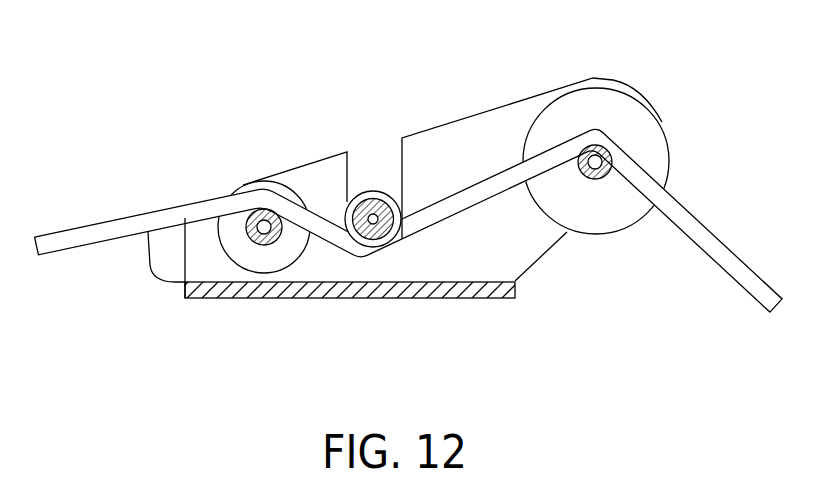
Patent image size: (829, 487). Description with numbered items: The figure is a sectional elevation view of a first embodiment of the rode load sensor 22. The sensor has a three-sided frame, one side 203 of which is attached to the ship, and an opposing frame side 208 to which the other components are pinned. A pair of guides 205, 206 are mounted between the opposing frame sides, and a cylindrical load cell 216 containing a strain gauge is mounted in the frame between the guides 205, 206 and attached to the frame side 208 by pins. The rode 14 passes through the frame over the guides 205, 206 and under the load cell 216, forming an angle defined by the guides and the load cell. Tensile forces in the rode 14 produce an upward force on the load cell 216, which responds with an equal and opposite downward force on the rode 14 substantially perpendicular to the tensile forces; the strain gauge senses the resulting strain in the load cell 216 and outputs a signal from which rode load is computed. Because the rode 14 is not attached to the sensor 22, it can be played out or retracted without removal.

The rode 14 is at (712, 240).
The rode load sensor 22 is at (196, 332).
The side of frame 203 is at (433, 293).
The guide 205 is at (258, 185).
The guide 206 is at (650, 133).
The frame side 208 is at (480, 127).
The cylindrical load cell 216 is at (373, 191).